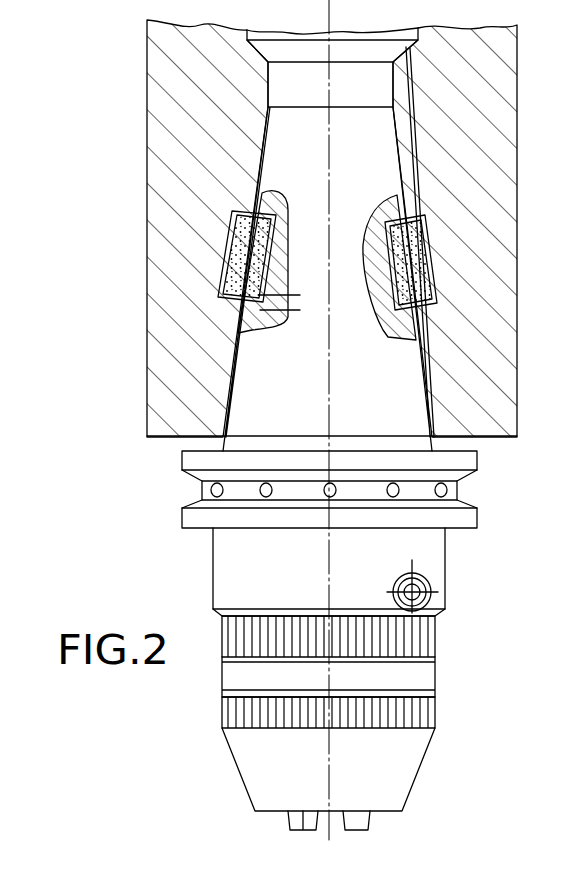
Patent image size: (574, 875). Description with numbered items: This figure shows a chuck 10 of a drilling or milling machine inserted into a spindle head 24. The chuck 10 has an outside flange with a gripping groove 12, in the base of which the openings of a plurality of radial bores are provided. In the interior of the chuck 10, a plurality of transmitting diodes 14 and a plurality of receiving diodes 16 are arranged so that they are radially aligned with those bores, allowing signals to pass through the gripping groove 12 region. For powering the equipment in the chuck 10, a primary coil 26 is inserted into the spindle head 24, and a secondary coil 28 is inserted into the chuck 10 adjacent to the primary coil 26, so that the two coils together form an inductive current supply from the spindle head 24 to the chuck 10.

The chuck 10 is at (207, 746).
The gripping groove 12 is at (198, 489).
The transmitting diodes 14 is at (211, 497).
The receiving diodes 16 is at (262, 500).
The spindle head 24 is at (158, 370).
The primary coil 26 is at (223, 283).
The secondary coil 28 is at (269, 213).